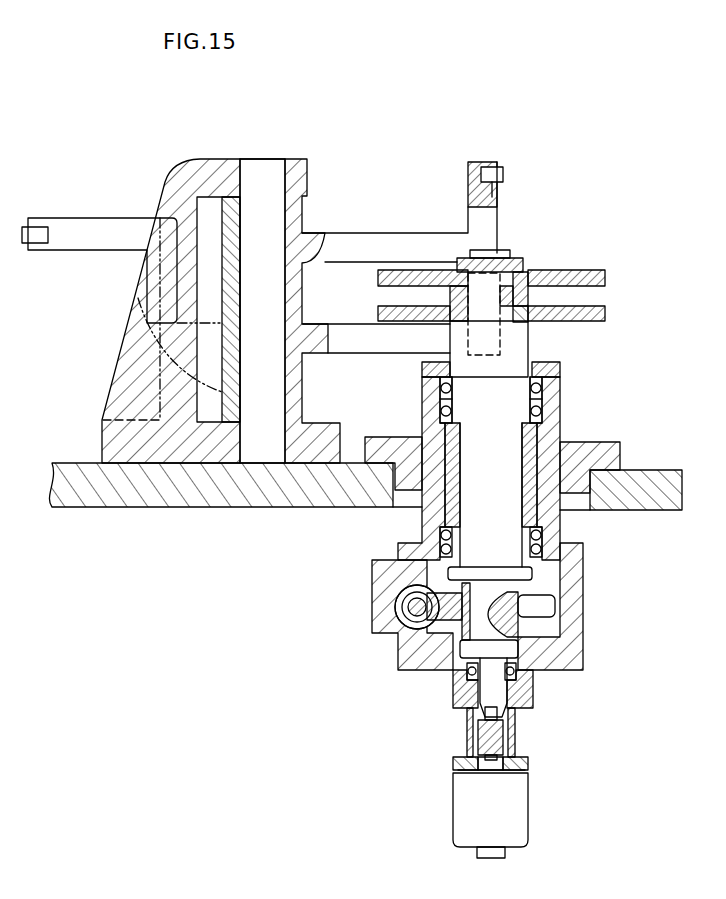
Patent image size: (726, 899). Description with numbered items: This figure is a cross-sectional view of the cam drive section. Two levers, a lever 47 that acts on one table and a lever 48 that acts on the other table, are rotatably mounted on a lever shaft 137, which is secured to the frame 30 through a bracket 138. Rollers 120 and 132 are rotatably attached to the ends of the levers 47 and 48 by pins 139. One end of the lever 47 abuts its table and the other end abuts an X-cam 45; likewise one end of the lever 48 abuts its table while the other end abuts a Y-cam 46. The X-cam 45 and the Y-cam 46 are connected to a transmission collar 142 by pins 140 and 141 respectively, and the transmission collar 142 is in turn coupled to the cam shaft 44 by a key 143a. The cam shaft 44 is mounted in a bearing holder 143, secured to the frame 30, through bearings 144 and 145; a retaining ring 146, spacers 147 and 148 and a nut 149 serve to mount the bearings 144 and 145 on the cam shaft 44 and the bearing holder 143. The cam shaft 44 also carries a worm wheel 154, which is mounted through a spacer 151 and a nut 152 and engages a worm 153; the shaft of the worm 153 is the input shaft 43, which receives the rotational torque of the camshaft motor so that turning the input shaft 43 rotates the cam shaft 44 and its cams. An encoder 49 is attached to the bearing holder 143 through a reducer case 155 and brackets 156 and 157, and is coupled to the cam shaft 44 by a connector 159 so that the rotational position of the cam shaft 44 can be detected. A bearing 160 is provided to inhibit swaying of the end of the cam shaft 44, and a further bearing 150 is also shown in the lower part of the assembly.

The frame 30 is at (622, 505).
The input shaft 43 is at (406, 607).
The cam shaft 44 is at (475, 498).
The X-cam 45 is at (605, 312).
The Y-cam 46 is at (605, 273).
The lever 47 is at (100, 228).
The lever 48 is at (369, 245).
The encoder 49 is at (518, 813).
The roller 120 is at (490, 313).
The roller 132 is at (480, 162).
The lever shaft 137 is at (260, 210).
The bracket 138 is at (180, 195).
The pin 139 is at (490, 165).
The pin 140 is at (530, 316).
The pin 141 is at (523, 280).
The transmission collar 142 is at (470, 290).
The bearing holder 143 is at (597, 453).
The key 143a is at (533, 273).
The bearing 144 is at (543, 386).
The bearing 145 is at (538, 538).
The retaining ring 146 is at (560, 368).
The spacer 147 is at (530, 455).
The spacer 148 is at (533, 572).
The nut 149 is at (520, 622).
The bearing 150 is at (516, 672).
The spacer 151 is at (413, 665).
The nut 152 is at (453, 677).
The worm 153 is at (398, 624).
The worm wheel 154 is at (527, 648).
The reducer case 155 is at (578, 595).
The bracket 156 is at (535, 688).
The bracket 157 is at (518, 715).
The connector 159 is at (495, 738).
The bearing 160 is at (528, 690).